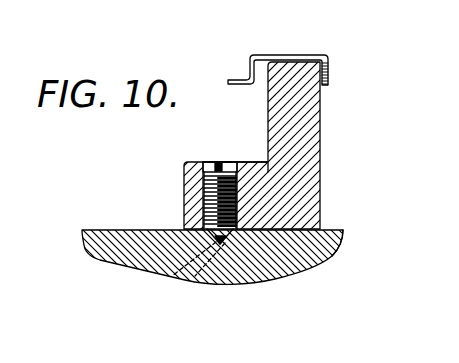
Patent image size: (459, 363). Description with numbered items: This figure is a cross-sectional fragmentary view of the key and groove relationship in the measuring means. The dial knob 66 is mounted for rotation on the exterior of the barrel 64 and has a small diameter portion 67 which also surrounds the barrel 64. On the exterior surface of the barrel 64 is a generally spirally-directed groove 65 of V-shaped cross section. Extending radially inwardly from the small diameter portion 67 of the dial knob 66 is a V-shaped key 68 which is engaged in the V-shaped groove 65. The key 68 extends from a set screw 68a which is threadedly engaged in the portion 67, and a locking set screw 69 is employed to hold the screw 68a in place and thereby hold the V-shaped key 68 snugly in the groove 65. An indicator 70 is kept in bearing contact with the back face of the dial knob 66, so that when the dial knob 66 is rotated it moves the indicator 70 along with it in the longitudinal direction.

The barrel 64 is at (345, 232).
The groove 65 is at (228, 247).
The dial knob 66 is at (312, 147).
The small diameter portion 67 is at (265, 158).
The V-shaped key 68 is at (218, 242).
The set screw 68a is at (203, 204).
The locking set screw 69 is at (212, 160).
The indicator 70 is at (328, 76).